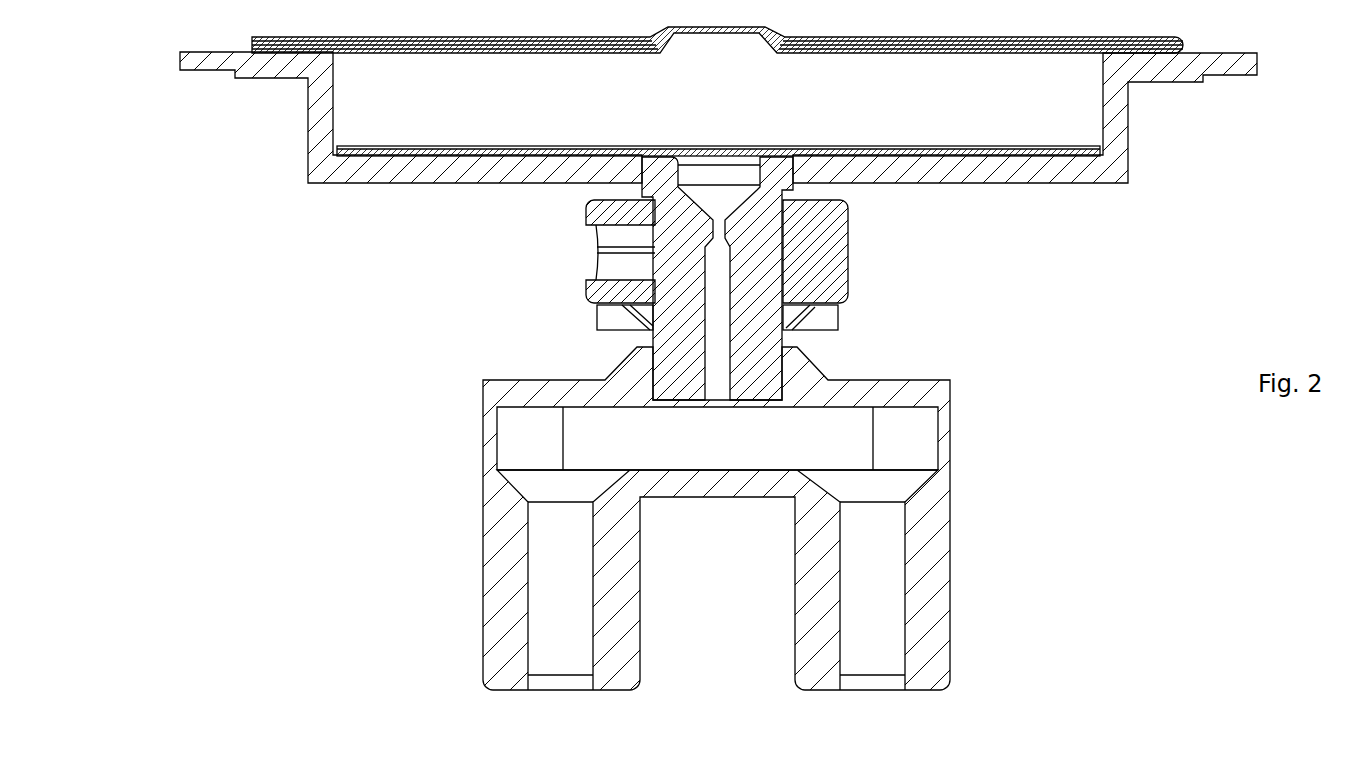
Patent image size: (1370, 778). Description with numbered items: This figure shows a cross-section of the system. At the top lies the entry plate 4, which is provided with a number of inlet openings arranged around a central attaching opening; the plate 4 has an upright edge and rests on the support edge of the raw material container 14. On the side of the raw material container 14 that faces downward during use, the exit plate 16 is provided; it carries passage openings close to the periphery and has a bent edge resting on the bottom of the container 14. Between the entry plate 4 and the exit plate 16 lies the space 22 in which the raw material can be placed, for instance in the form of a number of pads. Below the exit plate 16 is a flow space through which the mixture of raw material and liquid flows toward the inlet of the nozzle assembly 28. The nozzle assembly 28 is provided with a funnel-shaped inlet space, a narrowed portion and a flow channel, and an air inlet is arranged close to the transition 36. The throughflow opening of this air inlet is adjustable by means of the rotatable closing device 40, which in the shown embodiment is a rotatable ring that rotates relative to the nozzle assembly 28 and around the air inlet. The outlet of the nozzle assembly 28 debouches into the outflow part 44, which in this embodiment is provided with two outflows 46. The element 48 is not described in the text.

The entry plate 4 is at (1000, 55).
The raw material container 14 is at (322, 120).
The exit plate 16 is at (1015, 147).
The space 22 is at (460, 97).
The nozzle assembly 28 is at (757, 348).
The transition 36 is at (722, 200).
The closing device 40 is at (828, 257).
The outflow part 44 is at (930, 510).
The outflows 46 is at (562, 643).
The spring washer 48 is at (817, 318).